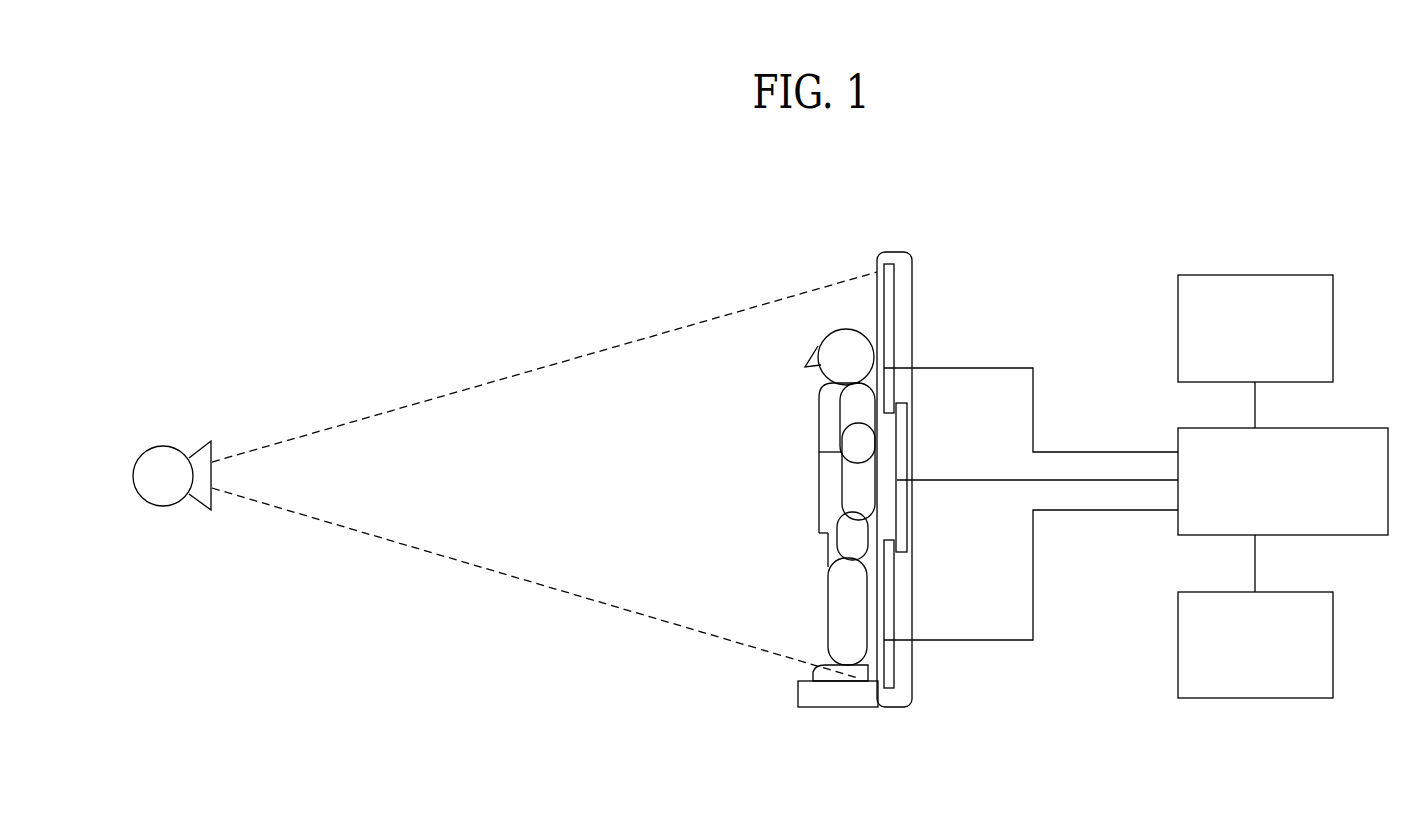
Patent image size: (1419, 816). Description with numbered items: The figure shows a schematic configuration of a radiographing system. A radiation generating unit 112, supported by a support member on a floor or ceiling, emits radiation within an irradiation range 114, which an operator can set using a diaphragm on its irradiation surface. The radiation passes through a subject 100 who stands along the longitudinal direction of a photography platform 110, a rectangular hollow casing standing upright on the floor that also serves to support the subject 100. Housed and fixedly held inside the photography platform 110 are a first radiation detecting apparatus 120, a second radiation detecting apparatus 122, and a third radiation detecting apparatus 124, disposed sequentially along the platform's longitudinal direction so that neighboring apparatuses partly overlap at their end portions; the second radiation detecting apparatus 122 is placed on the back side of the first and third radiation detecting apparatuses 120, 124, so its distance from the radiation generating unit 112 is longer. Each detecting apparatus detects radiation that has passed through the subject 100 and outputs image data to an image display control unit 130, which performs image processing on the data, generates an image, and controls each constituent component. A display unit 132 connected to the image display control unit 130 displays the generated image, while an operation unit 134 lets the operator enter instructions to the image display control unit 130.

The subject 100 is at (802, 356).
The photography platform 110 is at (914, 273).
The radiation generating unit 112 is at (163, 446).
The irradiation range 114 is at (510, 378).
The first radiation detecting apparatus 120 is at (897, 330).
The second radiation detecting apparatus 122 is at (909, 436).
The third radiation detecting apparatus 124 is at (914, 600).
The image display control unit 130 is at (1360, 428).
The display unit 132 is at (1333, 328).
The operation unit 134 is at (1333, 647).